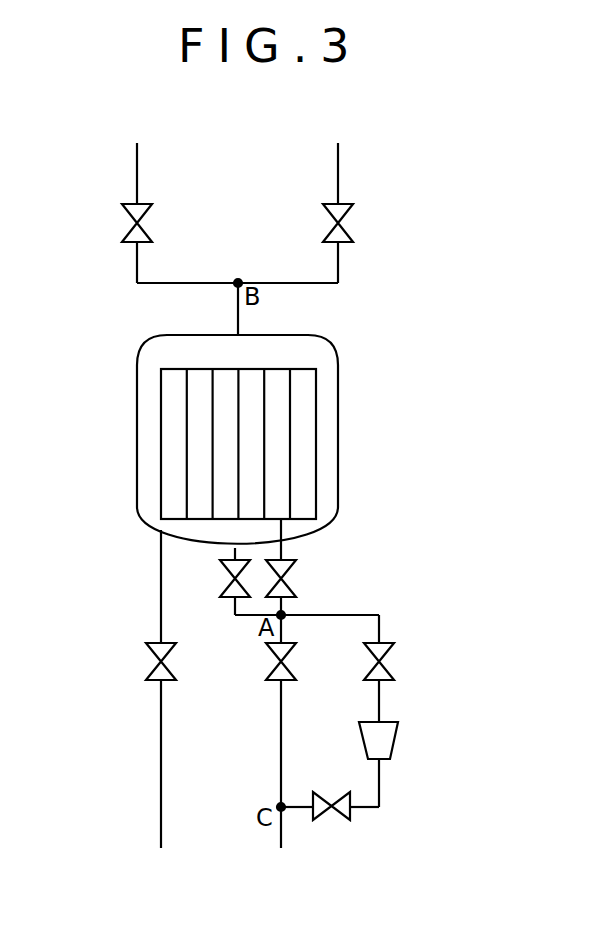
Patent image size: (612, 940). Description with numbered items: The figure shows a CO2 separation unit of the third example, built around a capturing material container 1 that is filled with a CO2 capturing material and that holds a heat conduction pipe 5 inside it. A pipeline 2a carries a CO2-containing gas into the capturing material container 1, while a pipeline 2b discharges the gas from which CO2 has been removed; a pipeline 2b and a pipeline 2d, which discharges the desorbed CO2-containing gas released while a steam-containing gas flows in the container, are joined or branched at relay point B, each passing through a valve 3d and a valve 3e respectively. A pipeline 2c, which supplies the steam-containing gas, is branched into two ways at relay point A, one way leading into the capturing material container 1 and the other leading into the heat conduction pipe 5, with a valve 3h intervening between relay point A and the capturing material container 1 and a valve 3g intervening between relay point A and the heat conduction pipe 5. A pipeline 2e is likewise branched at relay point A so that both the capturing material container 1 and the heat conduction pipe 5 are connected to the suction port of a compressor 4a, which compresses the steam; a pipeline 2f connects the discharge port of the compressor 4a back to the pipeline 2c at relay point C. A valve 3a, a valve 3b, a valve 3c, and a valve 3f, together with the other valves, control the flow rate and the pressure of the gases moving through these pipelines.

The capturing material container 1 is at (137, 433).
The heat conduction pipe 5 is at (316, 439).
The pipeline 2a is at (161, 727).
The pipeline 2b is at (137, 162).
The pipeline 2c is at (281, 727).
The pipeline 2d is at (338, 162).
The pipeline 2e is at (380, 627).
The pipeline 2f is at (369, 809).
The valve 3a is at (155, 652).
The valve 3b is at (275, 652).
The valve 3c is at (373, 652).
The valve 3d is at (132, 214).
The valve 3e is at (334, 214).
The valve 3f is at (331, 820).
The valve 3g is at (288, 569).
The valve 3h is at (226, 569).
The compressor 4a is at (397, 737).